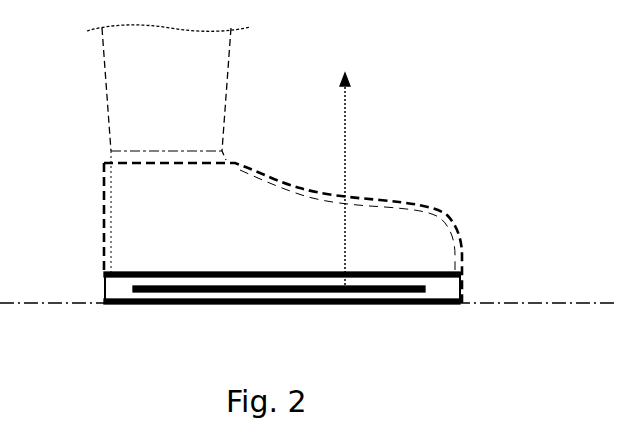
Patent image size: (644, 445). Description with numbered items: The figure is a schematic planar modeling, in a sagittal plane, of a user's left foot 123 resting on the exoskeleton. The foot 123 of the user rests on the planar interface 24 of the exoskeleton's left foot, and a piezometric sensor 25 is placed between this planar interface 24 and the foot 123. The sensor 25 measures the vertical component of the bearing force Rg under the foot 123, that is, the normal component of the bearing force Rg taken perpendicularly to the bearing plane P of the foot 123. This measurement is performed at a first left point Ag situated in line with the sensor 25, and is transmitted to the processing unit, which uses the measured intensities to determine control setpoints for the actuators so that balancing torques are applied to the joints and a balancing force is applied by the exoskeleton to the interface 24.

The left foot of the user 123 is at (208, 86).
The planar interface 24 is at (104, 282).
The piezometric sensor 25 is at (425, 290).
The bearing force RG is at (362, 179).
The first left point Ag is at (346, 284).
The bearing plane P is at (583, 304).